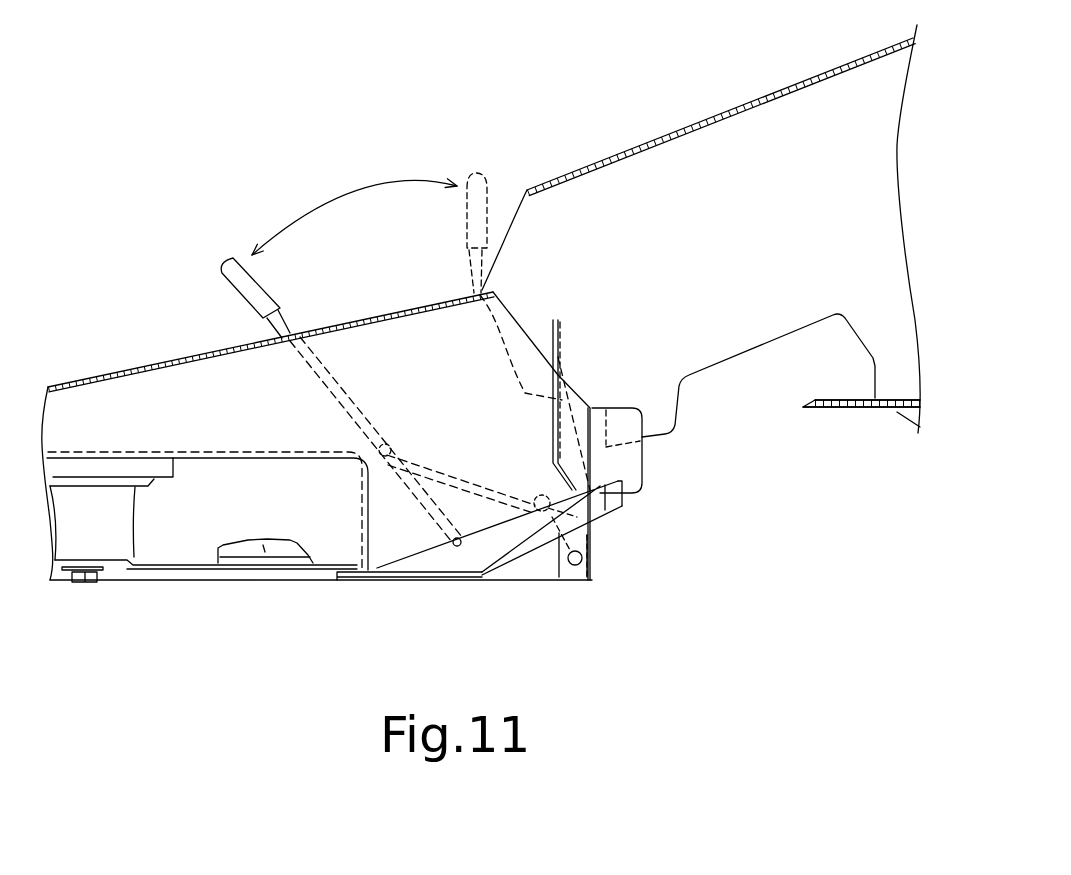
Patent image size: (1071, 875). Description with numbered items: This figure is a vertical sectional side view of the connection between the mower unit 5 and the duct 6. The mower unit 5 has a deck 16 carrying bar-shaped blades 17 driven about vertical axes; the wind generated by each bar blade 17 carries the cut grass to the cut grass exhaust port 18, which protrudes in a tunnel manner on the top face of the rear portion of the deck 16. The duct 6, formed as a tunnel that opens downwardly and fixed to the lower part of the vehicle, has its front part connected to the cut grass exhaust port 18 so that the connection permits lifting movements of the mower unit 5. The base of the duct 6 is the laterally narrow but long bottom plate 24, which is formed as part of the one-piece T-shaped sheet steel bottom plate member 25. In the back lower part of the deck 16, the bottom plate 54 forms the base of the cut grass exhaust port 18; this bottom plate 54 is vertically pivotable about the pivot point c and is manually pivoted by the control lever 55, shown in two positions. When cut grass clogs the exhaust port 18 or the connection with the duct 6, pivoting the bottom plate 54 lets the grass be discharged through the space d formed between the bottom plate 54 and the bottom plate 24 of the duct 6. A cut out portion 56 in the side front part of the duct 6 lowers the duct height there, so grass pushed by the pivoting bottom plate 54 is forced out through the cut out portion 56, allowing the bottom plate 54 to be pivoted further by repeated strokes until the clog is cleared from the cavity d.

The mower unit 5 is at (143, 363).
The duct 6 is at (720, 116).
The deck 16 is at (369, 317).
The bar-shaped blade 17 is at (272, 562).
The cut grass exhaust port 18 is at (515, 318).
The bottom plate 24 is at (848, 408).
The bottom plate member 25 is at (861, 403).
The bottom plate 54 is at (558, 322).
The control lever 55 is at (235, 257).
The cut out portion 56 is at (733, 358).
The pivot point c is at (578, 561).
The space d is at (703, 483).